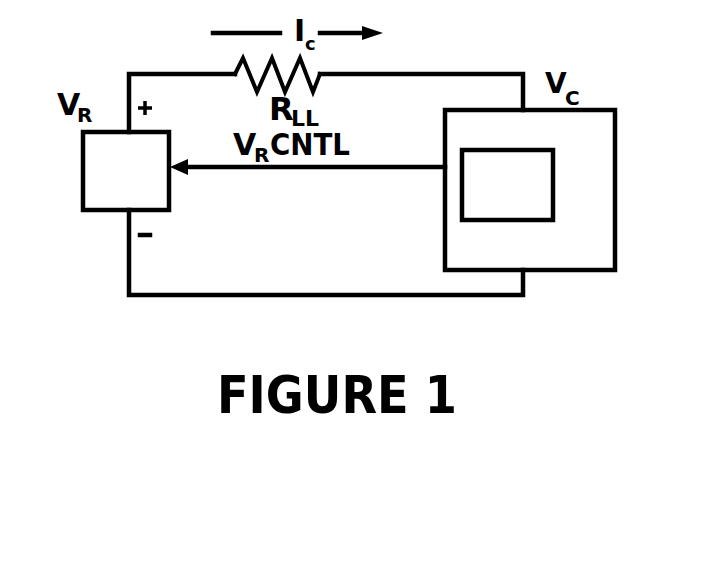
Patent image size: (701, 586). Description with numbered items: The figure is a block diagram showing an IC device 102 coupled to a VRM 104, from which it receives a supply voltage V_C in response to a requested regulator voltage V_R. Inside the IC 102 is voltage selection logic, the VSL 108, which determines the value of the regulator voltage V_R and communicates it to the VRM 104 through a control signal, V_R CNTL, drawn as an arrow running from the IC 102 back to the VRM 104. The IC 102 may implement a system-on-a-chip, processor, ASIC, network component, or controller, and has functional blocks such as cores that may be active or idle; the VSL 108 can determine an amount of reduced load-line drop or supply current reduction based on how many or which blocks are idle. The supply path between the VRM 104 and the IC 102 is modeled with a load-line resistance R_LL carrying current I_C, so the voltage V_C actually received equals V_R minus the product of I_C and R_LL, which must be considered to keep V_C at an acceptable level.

The IC device 102 is at (530, 190).
The VRM 104 is at (126, 171).
The voltage selection logic (VSL) 108 is at (507, 185).